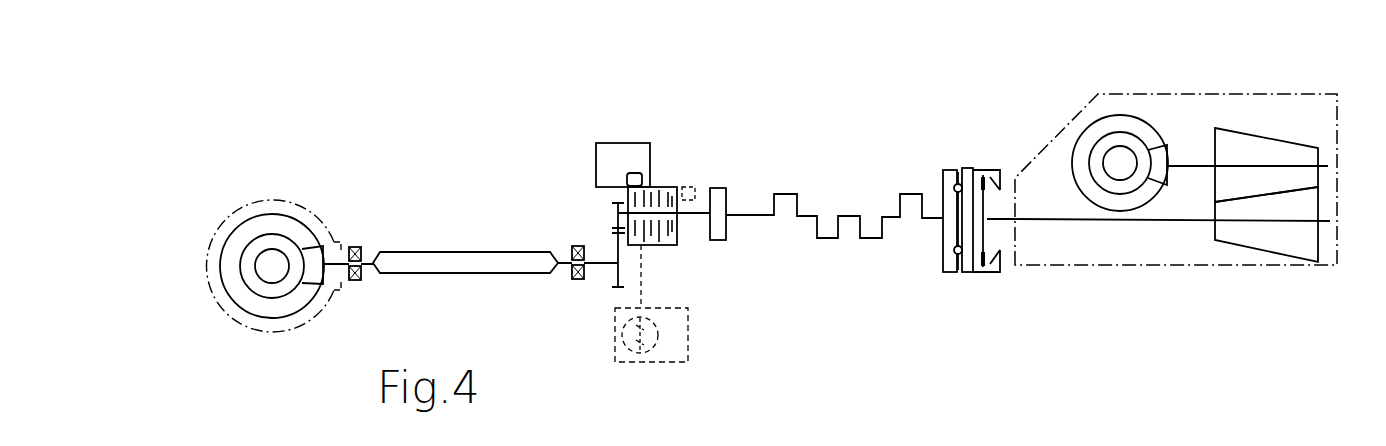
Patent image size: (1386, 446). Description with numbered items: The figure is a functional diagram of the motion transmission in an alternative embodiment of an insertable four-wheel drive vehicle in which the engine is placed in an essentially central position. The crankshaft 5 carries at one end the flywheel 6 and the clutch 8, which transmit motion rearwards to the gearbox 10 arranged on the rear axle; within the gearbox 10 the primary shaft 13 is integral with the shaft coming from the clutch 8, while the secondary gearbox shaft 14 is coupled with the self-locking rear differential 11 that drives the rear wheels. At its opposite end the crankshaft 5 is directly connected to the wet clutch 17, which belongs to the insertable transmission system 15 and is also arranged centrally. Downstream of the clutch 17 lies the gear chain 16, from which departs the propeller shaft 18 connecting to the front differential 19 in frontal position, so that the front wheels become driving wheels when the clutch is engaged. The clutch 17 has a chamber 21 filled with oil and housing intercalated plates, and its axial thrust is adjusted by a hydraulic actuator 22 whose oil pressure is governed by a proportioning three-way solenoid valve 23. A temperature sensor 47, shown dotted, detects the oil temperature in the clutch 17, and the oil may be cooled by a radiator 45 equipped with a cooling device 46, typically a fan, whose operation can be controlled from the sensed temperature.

The front differential 19 is at (275, 237).
The propeller shaft 18 is at (440, 258).
The gear chain 16 is at (592, 217).
The wet clutch 17 is at (662, 161).
The hydraulic actuator 22 is at (632, 150).
The proportioning three-way solenoid valve 23 is at (627, 177).
The temperature sensor 47 is at (693, 187).
The chamber 21 is at (665, 247).
The insertable transmission system 15 is at (658, 273).
The radiator 45 is at (690, 335).
The cooling device 46 is at (625, 335).
The crankshaft 5 is at (850, 217).
The flywheel 6 is at (957, 170).
The clutch 8 is at (988, 272).
The gearbox 10 is at (1232, 272).
The self-locking rear differential 11 is at (1118, 138).
The secondary gearbox shaft 14 is at (1255, 165).
The primary shaft 13 is at (1283, 225).